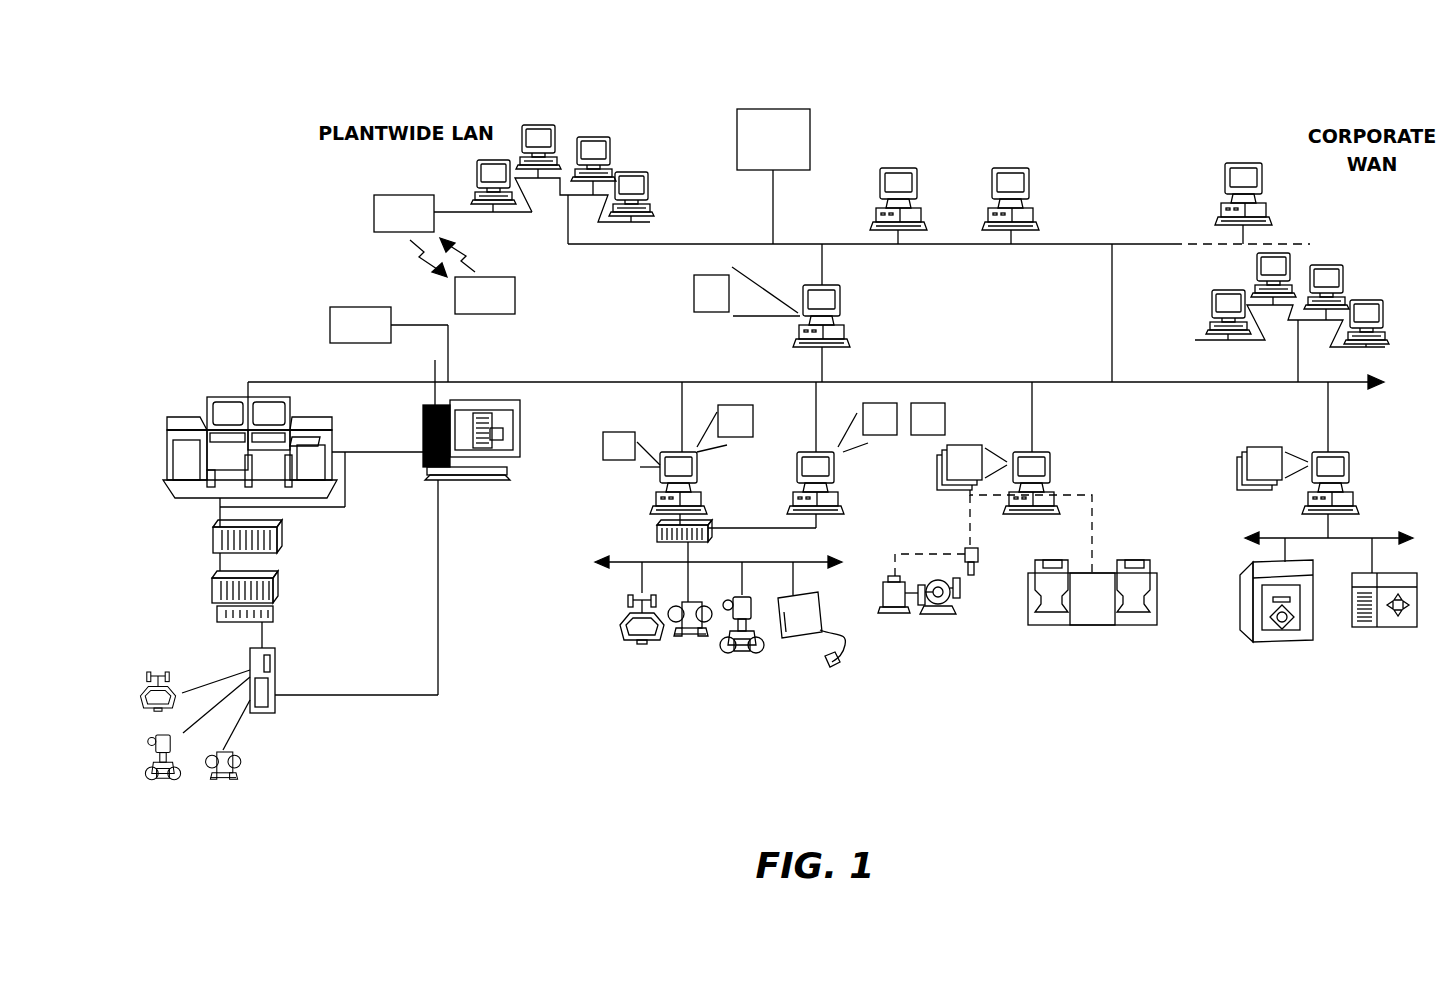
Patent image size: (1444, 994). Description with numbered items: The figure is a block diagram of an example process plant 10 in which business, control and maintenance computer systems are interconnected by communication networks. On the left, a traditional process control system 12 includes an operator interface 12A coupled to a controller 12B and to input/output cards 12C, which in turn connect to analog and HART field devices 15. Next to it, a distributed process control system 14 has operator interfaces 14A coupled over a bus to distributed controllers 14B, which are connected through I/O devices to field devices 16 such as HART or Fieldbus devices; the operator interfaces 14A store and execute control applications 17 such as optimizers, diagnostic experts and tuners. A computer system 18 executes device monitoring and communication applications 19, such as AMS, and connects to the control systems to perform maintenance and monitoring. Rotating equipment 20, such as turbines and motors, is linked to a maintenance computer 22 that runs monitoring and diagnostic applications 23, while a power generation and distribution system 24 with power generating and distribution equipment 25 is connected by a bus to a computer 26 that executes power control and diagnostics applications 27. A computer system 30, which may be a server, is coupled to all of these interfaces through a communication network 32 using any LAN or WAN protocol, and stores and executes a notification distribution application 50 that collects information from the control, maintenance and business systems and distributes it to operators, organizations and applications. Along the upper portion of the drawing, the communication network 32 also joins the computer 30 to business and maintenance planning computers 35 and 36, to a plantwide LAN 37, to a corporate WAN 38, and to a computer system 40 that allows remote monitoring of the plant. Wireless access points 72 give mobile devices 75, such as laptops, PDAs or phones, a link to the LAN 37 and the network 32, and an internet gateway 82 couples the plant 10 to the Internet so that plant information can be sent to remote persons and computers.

The process plant 10 is at (280, 185).
The process control system 12 is at (264, 760).
The operator interface 12A is at (227, 397).
The controller 12B is at (282, 538).
The input/output cards 12C is at (275, 668).
The process control system 14 is at (743, 680).
The operator interfaces 14A is at (697, 472).
The distributed controllers 14B is at (657, 533).
The field devices 15 is at (138, 732).
The field devices 16 is at (688, 670).
The applications 17 is at (750, 435).
The computer system 18 is at (520, 450).
The device monitoring and communication applications 19 is at (502, 430).
The rotating equipment 20 is at (928, 640).
The maintenance computer 22 is at (1050, 470).
The monitoring and diagnostic applications 23 is at (972, 467).
The power generation and distribution system 24 is at (1352, 676).
The power generating and distribution equipment 25 is at (1280, 640).
The computer 26 is at (1349, 470).
The power control and diagnostics applications 27 is at (1272, 468).
The computer system 30 is at (840, 330).
The communication network 32 is at (540, 382).
The business system computer 35 is at (917, 182).
The maintenance planning computer 36 is at (1029, 182).
The plantwide LAN 37 is at (636, 148).
The corporate WAN 38 is at (1364, 272).
The computer system 40 is at (1262, 178).
The notification distribution application 50 is at (747, 291).
The wireless access points 72 is at (374, 212).
The mobile devices 75 is at (515, 294).
The internet gateway 82 is at (810, 111).